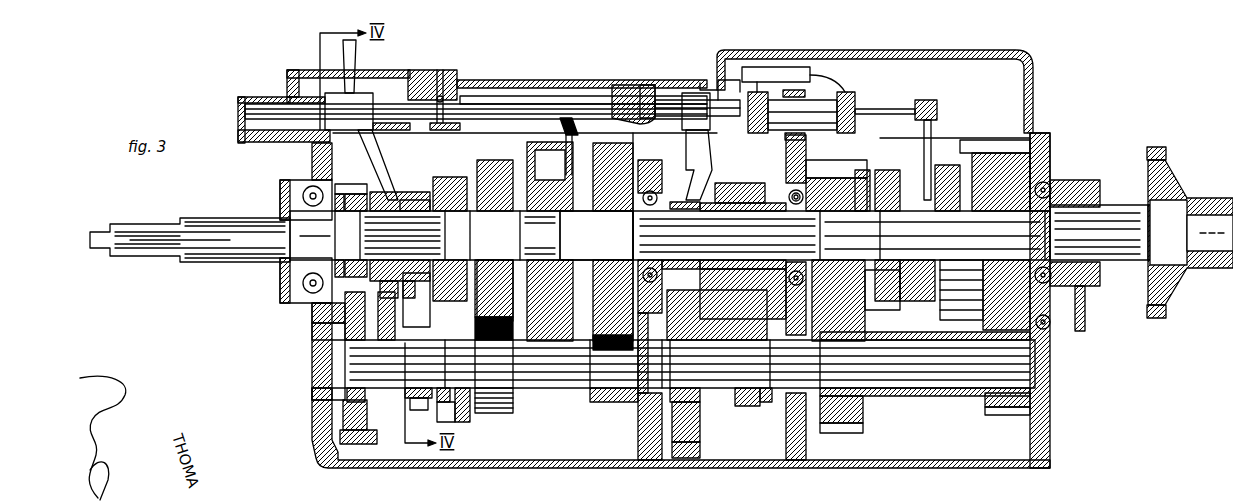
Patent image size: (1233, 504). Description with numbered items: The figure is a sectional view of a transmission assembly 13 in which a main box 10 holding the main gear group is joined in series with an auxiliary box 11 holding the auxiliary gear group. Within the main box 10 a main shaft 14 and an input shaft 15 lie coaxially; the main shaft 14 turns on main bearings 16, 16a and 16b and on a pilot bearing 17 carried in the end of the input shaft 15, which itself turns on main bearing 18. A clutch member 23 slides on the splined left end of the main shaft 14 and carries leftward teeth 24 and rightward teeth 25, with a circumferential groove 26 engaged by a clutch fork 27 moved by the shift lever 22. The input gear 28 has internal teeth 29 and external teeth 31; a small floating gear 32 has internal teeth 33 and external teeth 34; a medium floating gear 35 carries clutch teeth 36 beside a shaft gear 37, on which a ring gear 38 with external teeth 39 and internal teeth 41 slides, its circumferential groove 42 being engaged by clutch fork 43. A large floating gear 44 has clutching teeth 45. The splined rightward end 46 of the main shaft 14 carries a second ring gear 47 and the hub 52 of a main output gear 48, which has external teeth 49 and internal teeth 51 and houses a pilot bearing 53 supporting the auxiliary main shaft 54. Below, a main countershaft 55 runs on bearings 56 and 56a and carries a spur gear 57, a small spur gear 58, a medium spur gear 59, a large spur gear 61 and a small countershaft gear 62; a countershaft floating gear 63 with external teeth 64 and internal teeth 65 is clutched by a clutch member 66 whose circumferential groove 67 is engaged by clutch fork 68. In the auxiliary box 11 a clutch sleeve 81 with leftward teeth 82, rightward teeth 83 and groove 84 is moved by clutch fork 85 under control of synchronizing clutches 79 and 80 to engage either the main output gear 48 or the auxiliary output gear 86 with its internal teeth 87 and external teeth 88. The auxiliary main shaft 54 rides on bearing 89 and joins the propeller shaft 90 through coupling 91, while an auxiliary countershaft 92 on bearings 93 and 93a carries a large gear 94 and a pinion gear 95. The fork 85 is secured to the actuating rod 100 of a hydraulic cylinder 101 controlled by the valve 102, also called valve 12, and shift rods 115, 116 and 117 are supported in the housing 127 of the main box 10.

The main box 10 is at (315, 470).
The auxiliary box 11 is at (1056, 458).
The valve 12 is at (1032, 60).
The transmission assembly 13 is at (290, 388).
The main shaft 14 is at (478, 229).
The input shaft 15 is at (233, 262).
The main bearing 16 is at (660, 165).
The main bearing 16a is at (722, 203).
The main bearing 16b is at (800, 190).
The pilot bearing 17 is at (350, 184).
The main bearing 18 is at (300, 298).
The shift lever 22 is at (343, 50).
The clutch member 23 is at (383, 282).
The leftward teeth 24 is at (388, 281).
The rightward teeth 25 is at (405, 192).
The circumferential groove 26 is at (418, 282).
The clutch fork 27 is at (385, 160).
The input gear 28 is at (282, 208).
The internal teeth 29 is at (358, 194).
The external teeth 31 is at (340, 194).
The small floating gear 32 is at (455, 177).
The internal teeth 33 is at (415, 200).
The external teeth 34 is at (445, 177).
The medium floating gear 35 is at (492, 160).
The clutch teeth 36 is at (533, 316).
The shaft gear 37 is at (580, 222).
The ring gear 38 is at (535, 142).
The external teeth 39 is at (548, 150).
The internal teeth 41 is at (500, 175).
The circumferential groove 42 is at (585, 285).
The clutch fork 43 is at (570, 150).
The large floating gear 44 is at (608, 130).
The clutching teeth 45 is at (590, 290).
The rightward end 46 is at (752, 240).
The second ring gear 47 is at (676, 200).
The main output gear 48 is at (852, 162).
The external teeth 49 is at (826, 180).
The internal teeth 51 is at (862, 305).
The hub 52 is at (745, 300).
The pilot bearing 53 is at (858, 175).
The auxiliary main shaft 54 is at (1115, 245).
The main countershaft 55 is at (395, 375).
The bearing 56 is at (322, 345).
The bearing 56a is at (641, 420).
The spur gear 57 is at (358, 445).
The small spur gear 58 is at (418, 402).
The medium spur gear 59 is at (458, 424).
The large spur gear 61 is at (495, 413).
The small countershaft gear 62 is at (606, 395).
The countershaft floating gear 63 is at (684, 442).
The external teeth 64 is at (698, 458).
The internal teeth 65 is at (722, 402).
The clutch member 66 is at (766, 404).
The circumferential groove 67 is at (748, 406).
The clutch fork 68 is at (694, 160).
The synchronizing clutch 79 is at (880, 320).
The synchronizing clutch 80 is at (945, 165).
The clutch sleeve 81 is at (890, 290).
The leftward teeth 82 is at (880, 178).
The rightward teeth 83 is at (985, 300).
The circumferential groove 84 is at (920, 270).
The clutch fork 85 is at (924, 127).
The auxiliary output gear 86 is at (1002, 138).
The internal teeth 87 is at (980, 153).
The external teeth 88 is at (1040, 133).
The bearing 89 is at (1056, 185).
The propeller shaft 90 is at (1200, 198).
The coupling 91 is at (1160, 146).
The auxiliary countershaft 92 is at (935, 370).
The bearing 93 is at (820, 423).
The bearing 93a is at (1052, 324).
The large gear 94 is at (855, 435).
The pinion gear 95 is at (998, 418).
The actuating rod 100 is at (888, 109).
The hydraulic cylinder 101 is at (820, 100).
The valve 102 is at (787, 67).
The shift rod 115 is at (476, 104).
The shift rod 116 is at (545, 96).
The shift rod 117 is at (733, 88).
The housing 127 is at (630, 82).